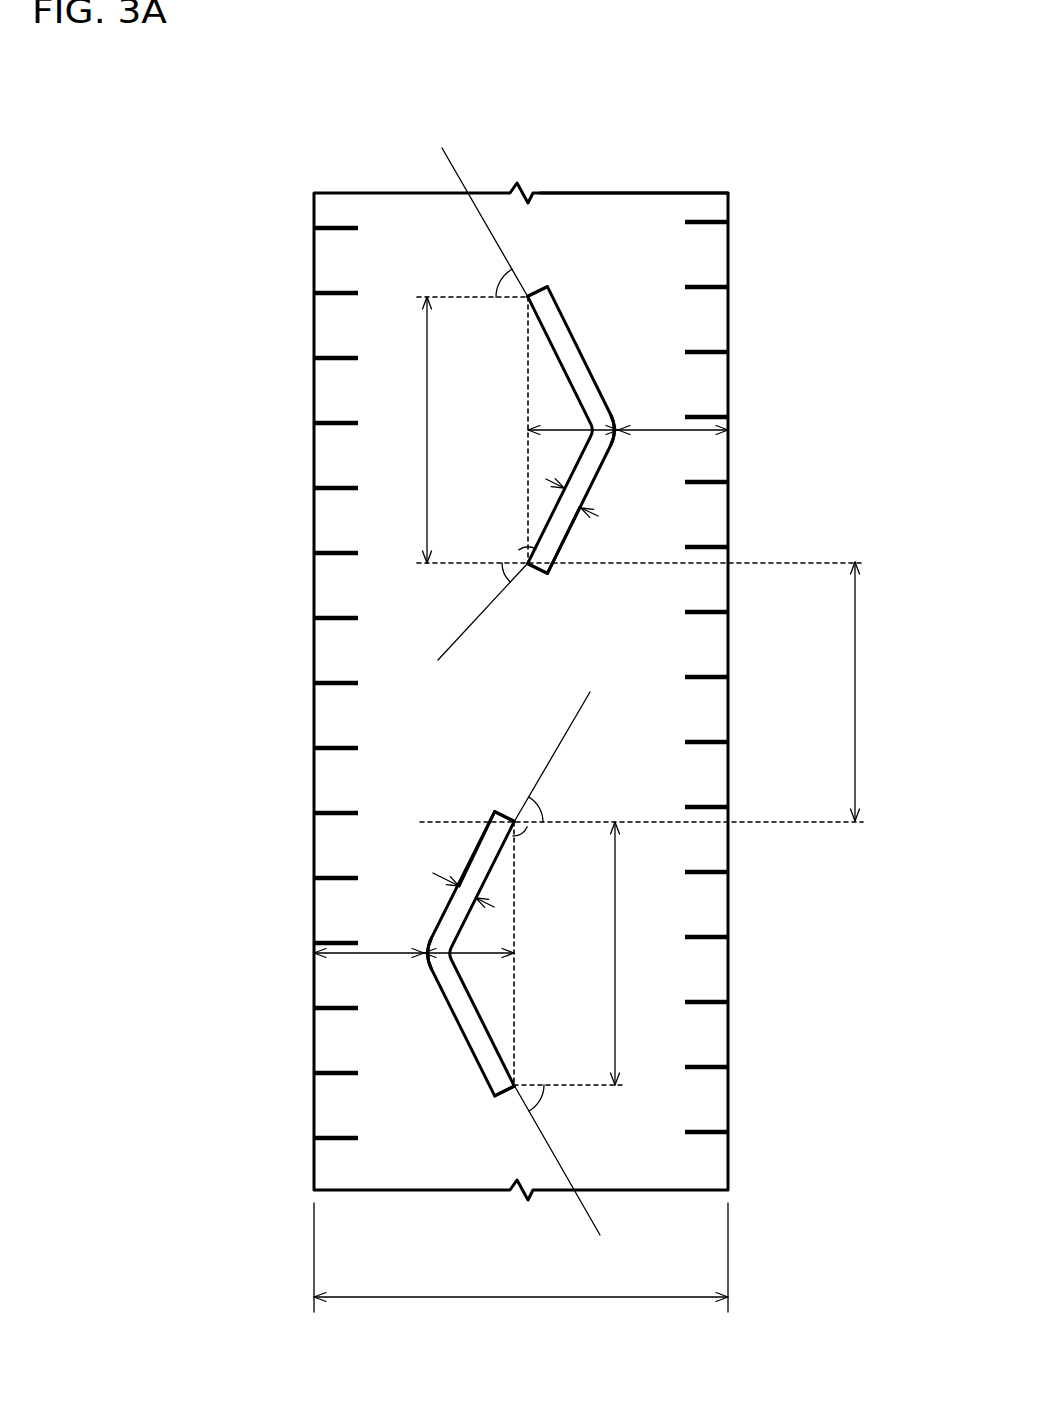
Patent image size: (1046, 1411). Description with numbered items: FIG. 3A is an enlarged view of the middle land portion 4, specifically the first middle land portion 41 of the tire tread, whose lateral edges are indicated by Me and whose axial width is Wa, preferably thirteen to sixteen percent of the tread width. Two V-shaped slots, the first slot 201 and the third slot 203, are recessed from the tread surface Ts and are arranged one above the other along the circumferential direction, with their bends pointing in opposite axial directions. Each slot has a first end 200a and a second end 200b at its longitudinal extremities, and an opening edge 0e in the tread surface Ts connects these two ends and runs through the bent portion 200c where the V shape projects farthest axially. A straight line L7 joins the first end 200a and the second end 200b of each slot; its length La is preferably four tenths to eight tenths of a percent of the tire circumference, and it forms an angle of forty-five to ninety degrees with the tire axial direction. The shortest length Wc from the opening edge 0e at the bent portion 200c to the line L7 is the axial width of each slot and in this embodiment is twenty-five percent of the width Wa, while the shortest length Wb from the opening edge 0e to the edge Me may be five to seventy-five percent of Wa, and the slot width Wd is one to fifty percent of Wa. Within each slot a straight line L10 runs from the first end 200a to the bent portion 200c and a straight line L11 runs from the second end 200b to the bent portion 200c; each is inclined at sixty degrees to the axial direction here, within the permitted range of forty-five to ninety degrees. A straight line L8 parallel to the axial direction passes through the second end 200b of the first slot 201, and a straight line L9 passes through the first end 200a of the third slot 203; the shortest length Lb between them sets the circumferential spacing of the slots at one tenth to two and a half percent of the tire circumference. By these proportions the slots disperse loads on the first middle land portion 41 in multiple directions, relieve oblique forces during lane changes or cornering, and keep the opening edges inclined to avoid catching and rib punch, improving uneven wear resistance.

The middle land portion 4 is at (521, 649).
The first middle land portion 41 is at (378, 192).
The edge of the first middle land portion Me is at (314, 316).
The tread surface Ts is at (660, 193).
The first slot 201 is at (581, 352).
The third slot 203 is at (463, 1032).
The first end 200a is at (529, 293).
The second end 200b is at (531, 571).
The bent portion 200c is at (616, 428).
The opening edge 0e is at (566, 538).
The straight line connecting the first end and the second end L7 is at (527, 379).
The straight line through the second end of the first slot L8 is at (798, 561).
The straight line through the first end of the third slot L9 is at (800, 823).
The straight line from the first end to the bent portion L10 is at (462, 182).
The straight line from the second end to the bent portion L11 is at (450, 648).
The length of the straight line L7 La is at (514, 691).
The shortest length between lines L8 and L9 Lb is at (872, 691).
The width of the first middle land portion Wa is at (521, 1269).
The shortest length from the opening edge to the edge Me Wb is at (521, 705).
The shortest length from the bent portion to line L7 Wc is at (521, 705).
The width of the slot Wd is at (596, 490).